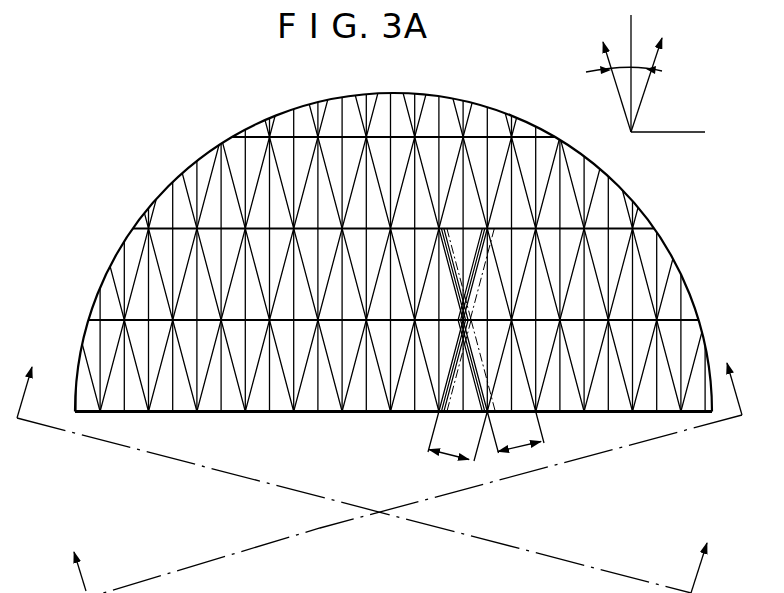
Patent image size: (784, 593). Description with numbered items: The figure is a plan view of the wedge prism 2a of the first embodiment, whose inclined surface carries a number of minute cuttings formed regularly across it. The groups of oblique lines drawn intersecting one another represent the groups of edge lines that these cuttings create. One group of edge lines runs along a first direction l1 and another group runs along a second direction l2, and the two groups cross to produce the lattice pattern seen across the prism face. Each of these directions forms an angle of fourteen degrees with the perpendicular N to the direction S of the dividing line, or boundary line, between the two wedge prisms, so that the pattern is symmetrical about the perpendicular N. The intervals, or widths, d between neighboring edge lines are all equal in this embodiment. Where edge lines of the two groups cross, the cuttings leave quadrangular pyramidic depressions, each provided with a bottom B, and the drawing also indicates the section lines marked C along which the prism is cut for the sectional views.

The wedge prism 2a is at (175, 171).
The interval between the edge lines d is at (450, 456).
The bottom B is at (365, 462).
The section line C- C is at (399, 460).
The perpendicular to the direction of the dividing line N is at (630, 66).
The direction of the dividing line S is at (679, 136).
The first direction l1 is at (655, 70).
The second direction l2 is at (608, 70).